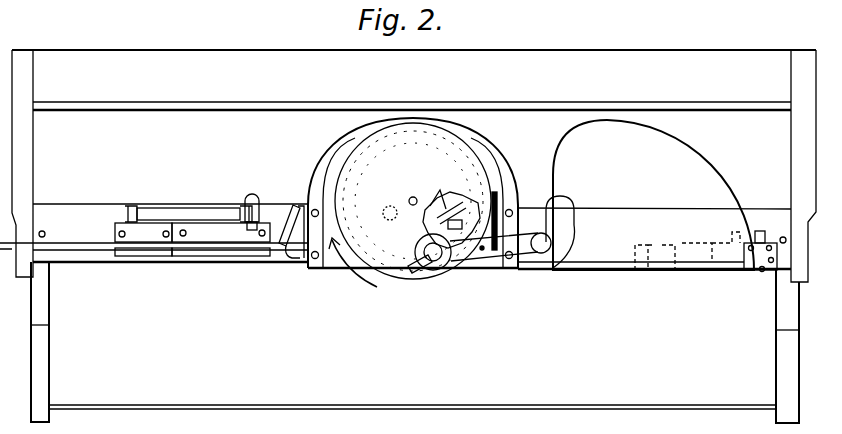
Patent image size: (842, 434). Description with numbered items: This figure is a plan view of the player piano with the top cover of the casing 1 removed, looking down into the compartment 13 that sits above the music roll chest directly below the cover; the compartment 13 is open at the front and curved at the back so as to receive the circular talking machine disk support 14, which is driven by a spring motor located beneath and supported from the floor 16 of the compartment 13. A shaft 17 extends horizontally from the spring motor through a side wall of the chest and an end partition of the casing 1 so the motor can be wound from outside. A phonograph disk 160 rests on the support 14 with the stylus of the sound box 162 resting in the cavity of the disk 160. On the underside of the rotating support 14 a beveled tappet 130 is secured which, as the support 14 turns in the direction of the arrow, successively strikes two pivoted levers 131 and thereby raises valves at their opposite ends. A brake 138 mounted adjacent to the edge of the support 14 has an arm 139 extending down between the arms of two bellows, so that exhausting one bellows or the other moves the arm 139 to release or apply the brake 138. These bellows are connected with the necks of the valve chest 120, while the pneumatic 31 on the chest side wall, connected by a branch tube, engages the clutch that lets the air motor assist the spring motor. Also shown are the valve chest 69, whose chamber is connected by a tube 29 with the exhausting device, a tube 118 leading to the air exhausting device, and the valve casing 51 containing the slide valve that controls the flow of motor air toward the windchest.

The casing 1 is at (33, 169).
The compartment 13 is at (492, 156).
The talking machine disk support 14 is at (433, 272).
The floor 16 is at (341, 262).
The shaft 17 is at (96, 224).
The tube 29 is at (254, 194).
The pneumatic 31 is at (291, 256).
The valve casing 51 is at (752, 272).
The valve chest 69 is at (224, 252).
The tube 118 is at (163, 213).
The valve chest 120 is at (152, 251).
The beveled block or tappet 130 is at (392, 203).
The lever 131 is at (448, 214).
The brake 138 is at (481, 258).
The arm 139 is at (498, 224).
The phonograph disk 160 is at (413, 201).
The sound box 162 is at (414, 273).